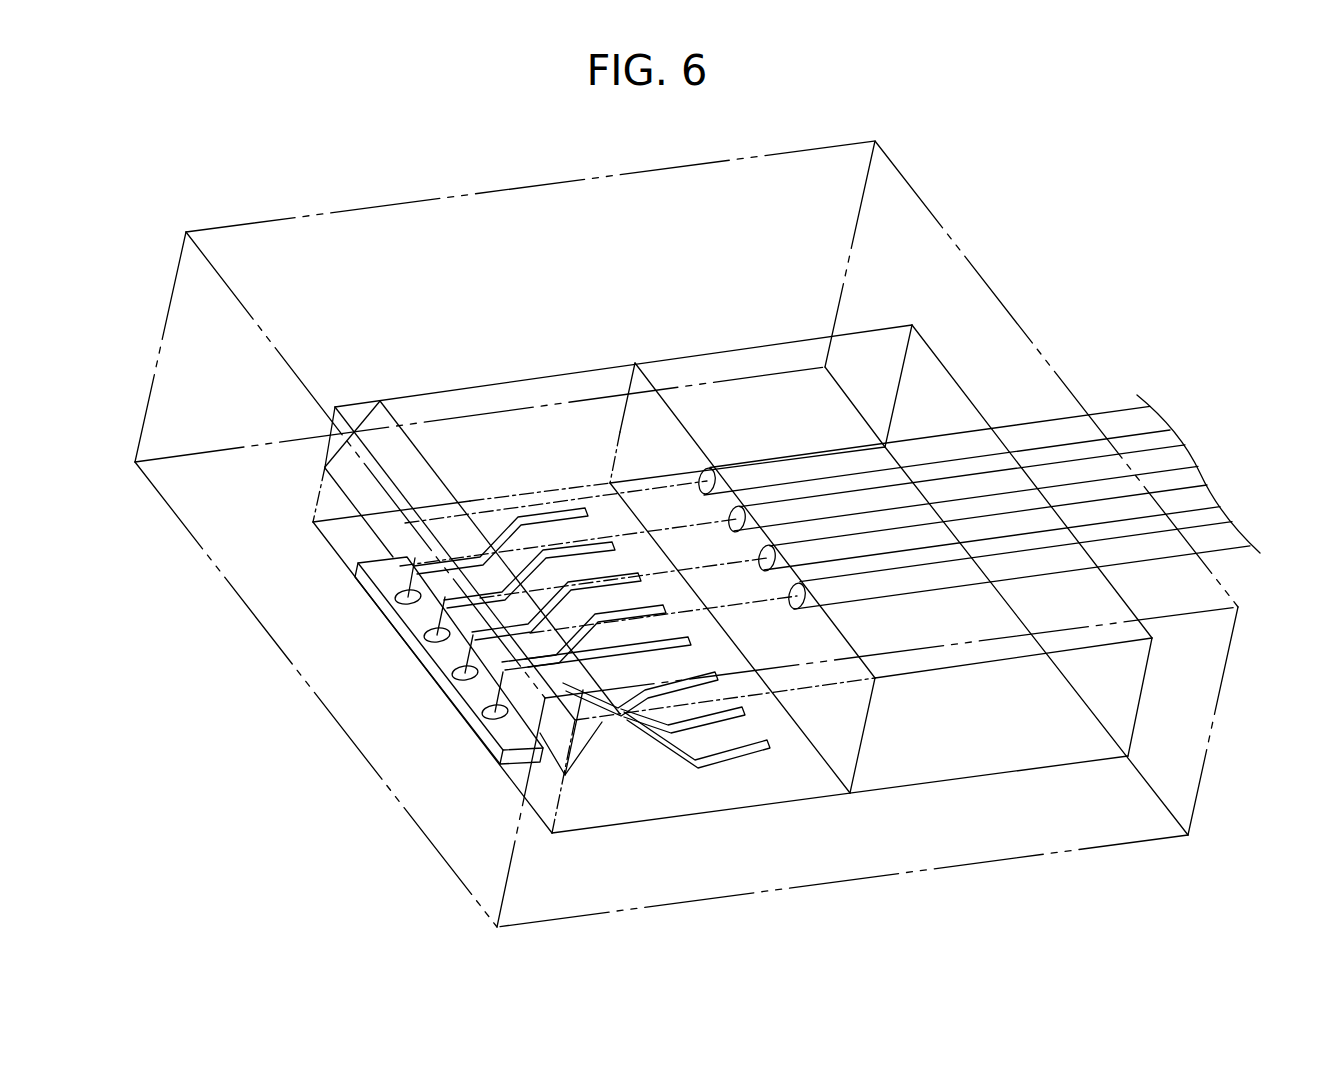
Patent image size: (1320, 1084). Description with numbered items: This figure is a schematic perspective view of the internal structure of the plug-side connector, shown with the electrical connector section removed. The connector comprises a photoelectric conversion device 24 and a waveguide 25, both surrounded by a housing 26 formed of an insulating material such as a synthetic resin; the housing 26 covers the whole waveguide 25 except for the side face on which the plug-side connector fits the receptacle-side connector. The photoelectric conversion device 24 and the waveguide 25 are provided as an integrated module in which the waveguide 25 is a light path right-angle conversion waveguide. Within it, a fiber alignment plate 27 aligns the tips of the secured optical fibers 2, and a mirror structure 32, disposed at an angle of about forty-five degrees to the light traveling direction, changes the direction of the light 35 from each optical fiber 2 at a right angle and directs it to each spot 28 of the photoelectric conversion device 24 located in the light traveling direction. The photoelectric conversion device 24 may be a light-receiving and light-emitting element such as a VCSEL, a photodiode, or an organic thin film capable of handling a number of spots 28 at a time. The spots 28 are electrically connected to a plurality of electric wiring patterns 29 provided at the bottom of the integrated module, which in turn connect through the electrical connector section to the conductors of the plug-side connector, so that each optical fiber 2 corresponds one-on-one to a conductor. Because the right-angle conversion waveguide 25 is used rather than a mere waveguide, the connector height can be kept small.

The optical fibers 2 is at (1113, 411).
The photoelectric conversion device 24 is at (486, 733).
The waveguide 25 is at (450, 395).
The housing 26 is at (504, 243).
The fiber alignment plate 27 is at (1005, 742).
The spots 28 is at (467, 723).
The electric wiring patterns 29 is at (733, 747).
The mirror structure 32 is at (358, 482).
The light 35 is at (600, 487).